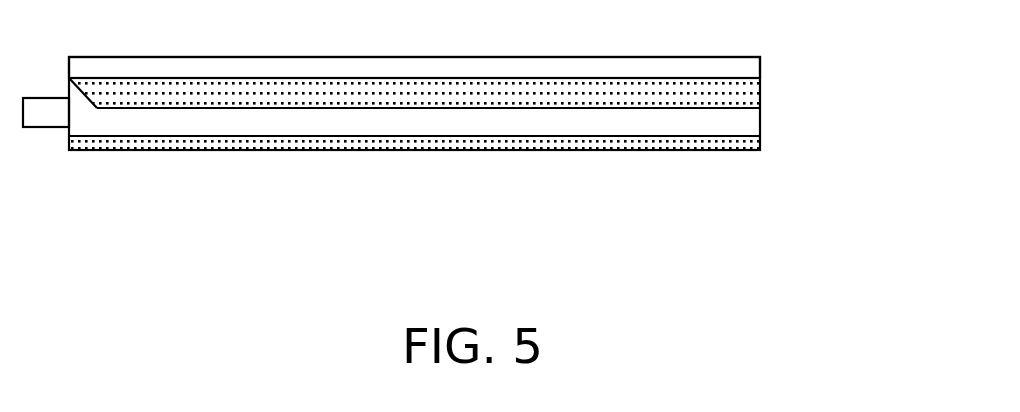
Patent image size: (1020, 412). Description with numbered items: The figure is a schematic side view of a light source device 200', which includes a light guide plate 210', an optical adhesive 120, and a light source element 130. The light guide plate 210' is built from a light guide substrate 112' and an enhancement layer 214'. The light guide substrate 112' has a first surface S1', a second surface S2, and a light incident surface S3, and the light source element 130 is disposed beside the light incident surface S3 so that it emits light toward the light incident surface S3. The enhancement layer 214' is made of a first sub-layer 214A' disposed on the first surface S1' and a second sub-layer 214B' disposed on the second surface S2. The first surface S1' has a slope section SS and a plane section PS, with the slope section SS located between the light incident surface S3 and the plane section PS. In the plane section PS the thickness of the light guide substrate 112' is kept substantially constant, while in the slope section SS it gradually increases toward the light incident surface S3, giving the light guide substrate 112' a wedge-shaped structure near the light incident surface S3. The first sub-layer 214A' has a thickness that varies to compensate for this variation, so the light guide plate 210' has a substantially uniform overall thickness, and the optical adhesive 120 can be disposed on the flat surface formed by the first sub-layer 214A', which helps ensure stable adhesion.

The optical adhesive 120 is at (713, 66).
The light source element 130 is at (47, 107).
The light guide substrate 112' is at (441, 111).
The first sub-layer 214A' is at (471, 76).
The second sub-layer 214B' is at (472, 138).
The enhancement layer 214' is at (472, 98).
The light guide plate 210' is at (502, 83).
The light source device 200' is at (475, 136).
The first surface S1' is at (134, 170).
The slope section SS is at (90, 100).
The plane section PS is at (150, 109).
The second surface S2 is at (357, 134).
The light incident surface S3 is at (66, 111).